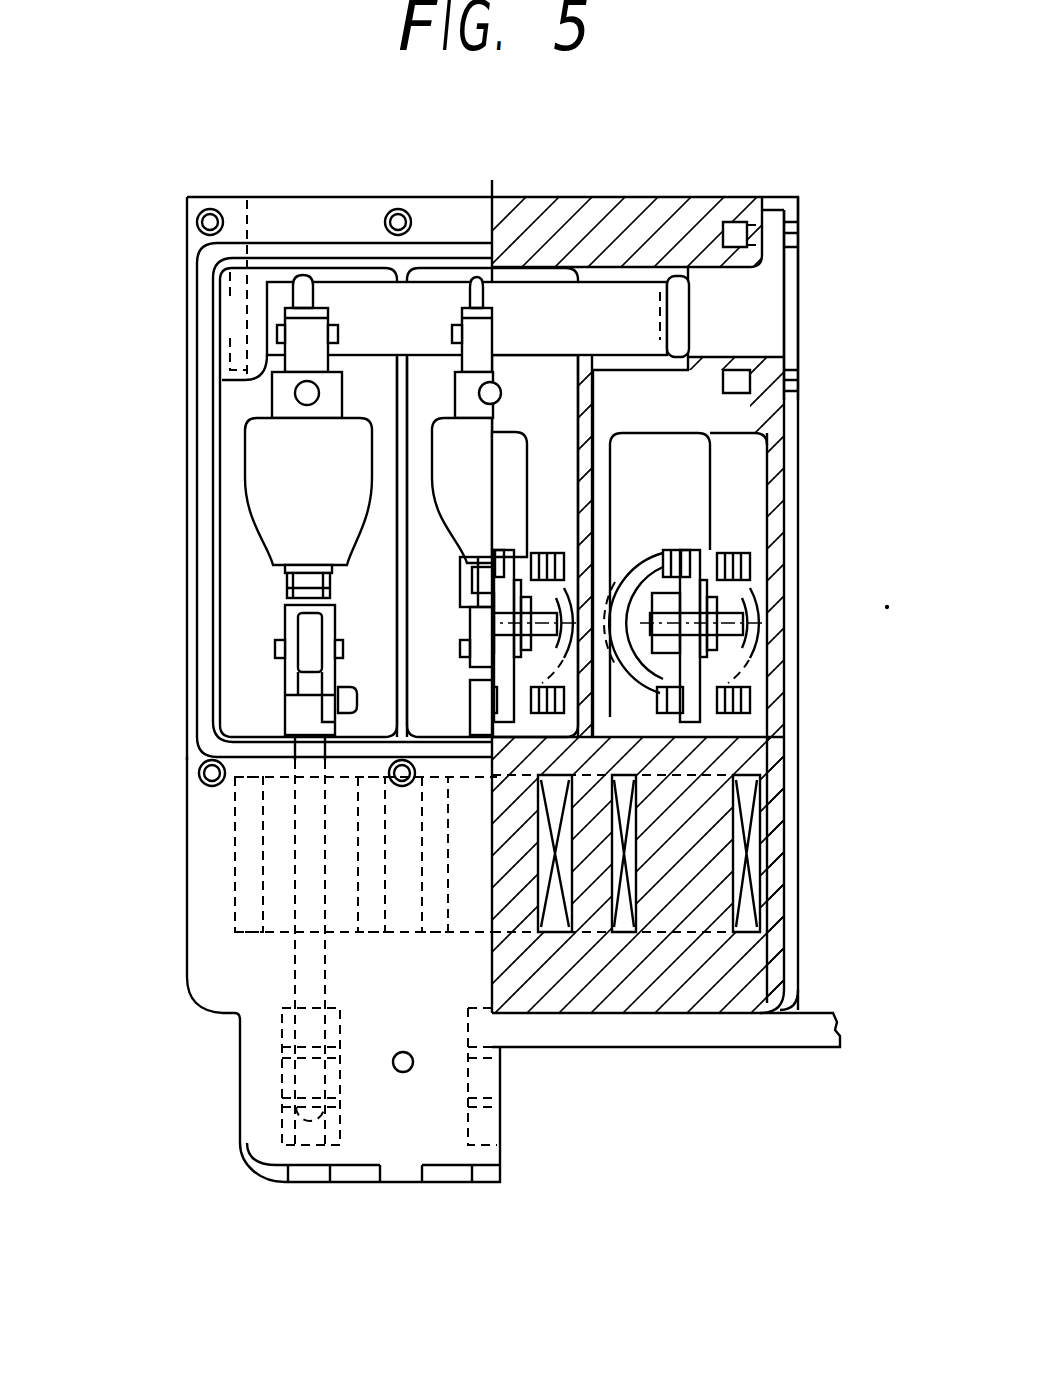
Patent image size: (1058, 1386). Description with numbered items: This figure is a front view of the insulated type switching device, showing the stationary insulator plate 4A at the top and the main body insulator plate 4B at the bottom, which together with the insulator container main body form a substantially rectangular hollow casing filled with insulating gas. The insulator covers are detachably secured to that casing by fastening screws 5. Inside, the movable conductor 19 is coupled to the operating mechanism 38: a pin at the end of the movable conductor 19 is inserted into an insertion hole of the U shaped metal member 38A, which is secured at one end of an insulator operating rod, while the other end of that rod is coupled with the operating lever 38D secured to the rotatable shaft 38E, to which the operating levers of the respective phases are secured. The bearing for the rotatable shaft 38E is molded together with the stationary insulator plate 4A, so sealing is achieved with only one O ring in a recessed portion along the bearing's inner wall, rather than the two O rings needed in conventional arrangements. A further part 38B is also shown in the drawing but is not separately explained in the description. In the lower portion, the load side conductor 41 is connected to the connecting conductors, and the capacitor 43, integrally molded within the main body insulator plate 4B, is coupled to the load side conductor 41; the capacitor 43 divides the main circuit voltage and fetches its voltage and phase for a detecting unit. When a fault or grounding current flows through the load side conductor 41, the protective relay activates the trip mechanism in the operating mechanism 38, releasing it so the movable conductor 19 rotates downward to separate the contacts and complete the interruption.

The stationary insulator plate 4A is at (717, 197).
The main body insulator plate 4B is at (260, 1040).
The fastening screws 5 is at (798, 236).
The movable conductor 19 is at (310, 643).
The operating mechanism 38 is at (265, 463).
The U shaped metal member 38A is at (287, 625).
The side tab 38B is at (285, 650).
The operating lever 38D is at (293, 352).
The rotatable shaft 38E is at (578, 300).
The load side conductor 41 is at (300, 965).
The capacitor 43 is at (335, 1008).